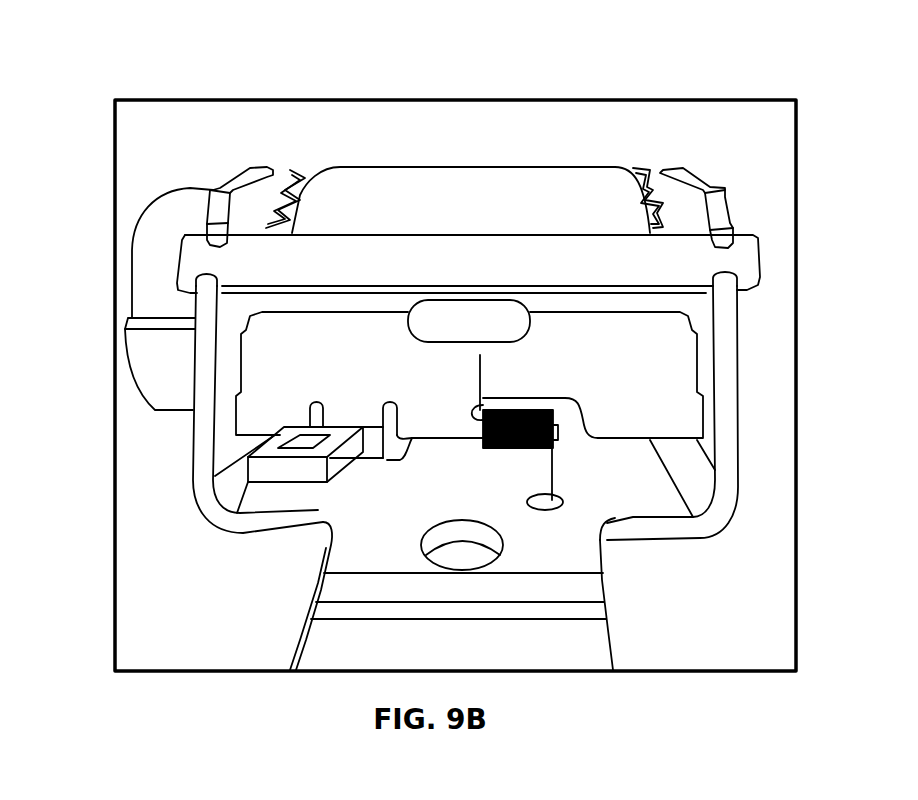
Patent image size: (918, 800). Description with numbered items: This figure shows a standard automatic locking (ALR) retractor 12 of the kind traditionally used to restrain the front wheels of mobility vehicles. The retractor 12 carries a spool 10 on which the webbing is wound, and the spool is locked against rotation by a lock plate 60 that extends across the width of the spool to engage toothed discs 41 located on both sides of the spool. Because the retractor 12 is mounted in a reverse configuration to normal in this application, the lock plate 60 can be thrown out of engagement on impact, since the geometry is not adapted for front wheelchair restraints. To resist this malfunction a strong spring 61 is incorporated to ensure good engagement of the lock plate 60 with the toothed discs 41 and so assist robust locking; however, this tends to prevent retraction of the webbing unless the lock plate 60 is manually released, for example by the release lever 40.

The roller 10 is at (497, 185).
The retractor 12 is at (139, 308).
The release lever 40 is at (277, 467).
The toothed discs 41 is at (643, 178).
The lock plate 60 is at (442, 380).
The spring 61 is at (557, 482).